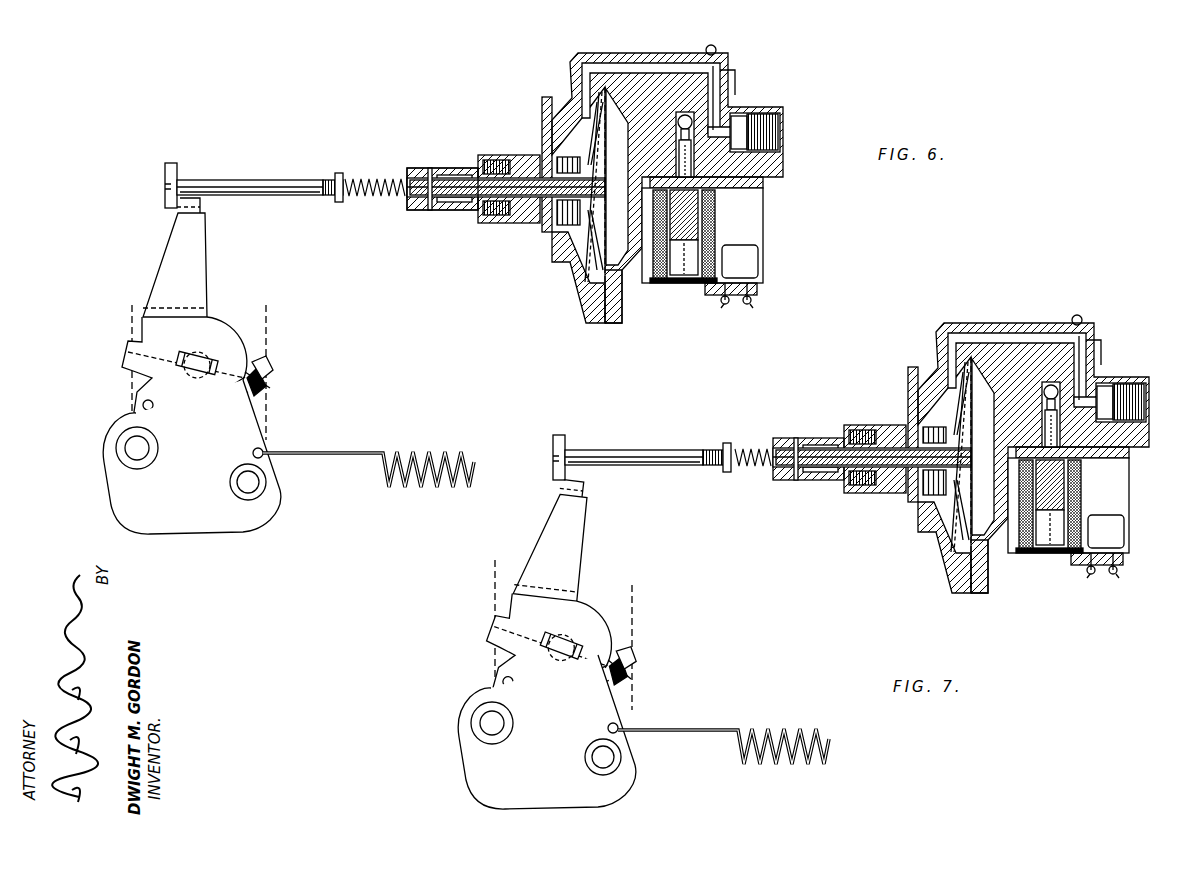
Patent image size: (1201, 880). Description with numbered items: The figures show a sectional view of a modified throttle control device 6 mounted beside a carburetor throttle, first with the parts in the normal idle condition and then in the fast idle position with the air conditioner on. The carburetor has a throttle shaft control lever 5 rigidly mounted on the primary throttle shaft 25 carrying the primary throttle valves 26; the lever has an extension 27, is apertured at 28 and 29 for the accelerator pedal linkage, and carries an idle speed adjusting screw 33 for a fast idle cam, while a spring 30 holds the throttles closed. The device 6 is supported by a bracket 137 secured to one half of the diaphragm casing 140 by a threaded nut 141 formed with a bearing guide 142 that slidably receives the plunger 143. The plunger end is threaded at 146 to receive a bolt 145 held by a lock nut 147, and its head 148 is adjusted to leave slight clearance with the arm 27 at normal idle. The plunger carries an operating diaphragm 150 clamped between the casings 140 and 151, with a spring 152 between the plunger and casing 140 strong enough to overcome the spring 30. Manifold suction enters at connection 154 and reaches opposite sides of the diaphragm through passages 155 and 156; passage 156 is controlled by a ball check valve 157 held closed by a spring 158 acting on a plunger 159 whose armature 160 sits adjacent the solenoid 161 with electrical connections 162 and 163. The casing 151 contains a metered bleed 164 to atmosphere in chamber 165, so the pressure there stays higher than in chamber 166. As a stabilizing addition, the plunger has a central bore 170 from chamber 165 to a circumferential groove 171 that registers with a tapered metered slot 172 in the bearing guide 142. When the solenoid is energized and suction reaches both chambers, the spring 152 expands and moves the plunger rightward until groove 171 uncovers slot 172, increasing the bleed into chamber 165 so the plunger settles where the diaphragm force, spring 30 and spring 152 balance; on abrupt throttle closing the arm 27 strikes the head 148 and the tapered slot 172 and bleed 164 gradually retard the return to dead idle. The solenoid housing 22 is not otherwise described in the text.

In FIG. 6, the primary throttle shaft control lever 5 is at (268, 509).
In FIG. 7, the primary throttle shaft control lever 5 is at (556, 732).
In FIG. 6, the throttle control device 6 is at (741, 58).
In FIG. 6, the solenoid 22 is at (771, 234).
In FIG. 7, the solenoid 22 is at (1088, 505).
In FIG. 6, the primary throttle shaft 25 is at (203, 356).
In FIG. 7, the primary throttle shaft 25 is at (563, 632).
In FIG. 6, the primary throttle valves 26 is at (147, 336).
In FIG. 7, the primary throttle valves 26 is at (548, 655).
In FIG. 6, the extension 27 is at (208, 248).
In FIG. 7, the extension 27 is at (568, 571).
In FIG. 6, the aperture 28 is at (258, 486).
In FIG. 6, the aperture 29 is at (126, 452).
In FIG. 6, the spring 30 is at (432, 457).
In FIG. 7, the spring 30 is at (718, 733).
In FIG. 6, the idle speed adjusting screw 33 is at (270, 374).
In FIG. 7, the idle speed adjusting screw 33 is at (640, 667).
In FIG. 6, the bracket 137 is at (545, 108).
In FIG. 7, the bracket 137 is at (889, 430).
In FIG. 6, the diaphragm casing 140 is at (592, 323).
In FIG. 7, the diaphragm casing 140 is at (944, 562).
In FIG. 6, the threaded nut 141 is at (478, 224).
In FIG. 7, the threaded nut 141 is at (866, 471).
In FIG. 6, the bearing guide 142 is at (448, 212).
In FIG. 6, the plunger 143 is at (374, 200).
In FIG. 7, the plunger 143 is at (752, 468).
In FIG. 6, the bolt 145 is at (268, 196).
In FIG. 6, the screw threads 146 is at (382, 178).
In FIG. 6, the lock nut 147 is at (337, 204).
In FIG. 6, the head 148 is at (176, 170).
In FIG. 7, the head 148 is at (566, 444).
In FIG. 6, the operating diaphragm 150 is at (603, 255).
In FIG. 7, the operating diaphragm 150 is at (938, 475).
In FIG. 6, the diaphragm casing 151 is at (620, 323).
In FIG. 7, the diaphragm casing 151 is at (1001, 580).
In FIG. 6, the spring 152 is at (566, 225).
In FIG. 7, the spring 152 is at (909, 443).
In FIG. 6, the connection 154 is at (780, 125).
In FIG. 7, the connection 154 is at (1142, 402).
In FIG. 6, the passage 155 is at (738, 82).
In FIG. 7, the passage 155 is at (1114, 346).
In FIG. 6, the passage 156 is at (720, 133).
In FIG. 7, the passage 156 is at (1111, 369).
In FIG. 6, the ball check valve 157 is at (688, 114).
In FIG. 7, the ball check valve 157 is at (1048, 376).
In FIG. 6, the spring 158 is at (700, 211).
In FIG. 7, the spring 158 is at (1079, 502).
In FIG. 6, the plunger 159 is at (783, 165).
In FIG. 7, the plunger 159 is at (1100, 444).
In FIG. 6, the armature 160 is at (700, 180).
In FIG. 7, the armature 160 is at (1083, 442).
In FIG. 6, the solenoid 161 is at (704, 244).
In FIG. 7, the solenoid 161 is at (1070, 505).
In FIG. 6, the electrical connection 162 is at (722, 306).
In FIG. 7, the electrical connection 162 is at (1088, 577).
In FIG. 6, the electrical connection 163 is at (752, 305).
In FIG. 7, the electrical connection 163 is at (1140, 575).
In FIG. 6, the metered bleed opening 164 is at (628, 262).
In FIG. 7, the metered bleed opening 164 is at (1001, 475).
In FIG. 6, the chamber 165 is at (592, 240).
In FIG. 7, the chamber 165 is at (934, 469).
In FIG. 6, the chamber 166 is at (585, 240).
In FIG. 7, the chamber 166 is at (929, 457).
In FIG. 6, the central bore 170 is at (500, 185).
In FIG. 7, the central bore 170 is at (872, 434).
In FIG. 6, the transverse circumferential groove 171 is at (430, 168).
In FIG. 7, the transverse circumferential groove 171 is at (790, 470).
In FIG. 6, the tapered metered slot 172 is at (452, 168).
In FIG. 7, the tapered metered slot 172 is at (808, 444).